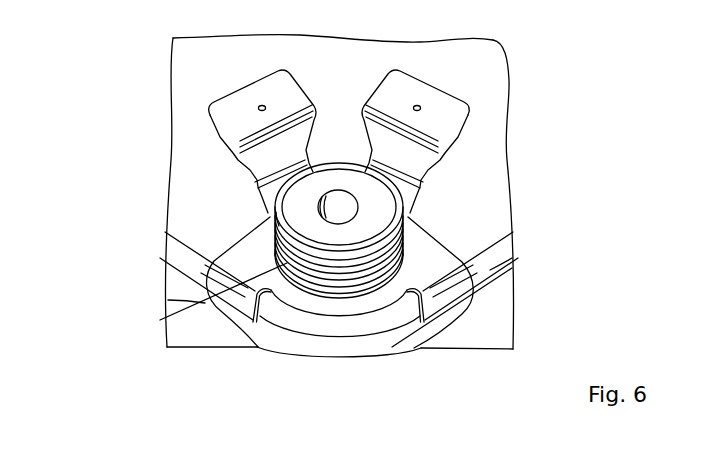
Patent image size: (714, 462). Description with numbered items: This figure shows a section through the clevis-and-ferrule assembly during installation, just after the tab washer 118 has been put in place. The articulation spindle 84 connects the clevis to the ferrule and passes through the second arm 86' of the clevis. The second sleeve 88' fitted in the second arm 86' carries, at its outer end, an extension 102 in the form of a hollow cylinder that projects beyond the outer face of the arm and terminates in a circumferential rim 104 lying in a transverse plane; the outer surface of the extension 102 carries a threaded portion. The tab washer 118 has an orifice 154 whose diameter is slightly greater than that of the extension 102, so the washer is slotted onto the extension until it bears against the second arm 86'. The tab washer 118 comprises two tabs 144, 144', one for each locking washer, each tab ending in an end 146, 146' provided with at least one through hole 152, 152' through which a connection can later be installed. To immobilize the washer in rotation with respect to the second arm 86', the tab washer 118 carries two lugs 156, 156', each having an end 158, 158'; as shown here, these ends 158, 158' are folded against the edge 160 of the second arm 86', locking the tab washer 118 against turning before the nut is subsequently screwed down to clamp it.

The articulation spindle 84 is at (372, 205).
The second arm 86' is at (550, 253).
The second sleeve 88' is at (131, 316).
The extension 102 is at (405, 240).
The circumferential rim 104 is at (275, 217).
The tab washer 118 is at (250, 172).
The tab 144 is at (346, 100).
The tab 144' is at (485, 119).
The end 146 is at (280, 111).
The end 146' is at (495, 113).
The through hole 152 is at (180, 65).
The through hole 152' is at (478, 55).
The orifice 154 is at (305, 295).
The lug 156 is at (154, 311).
The lug 156' is at (524, 282).
The end 158 is at (200, 350).
The end 158' is at (467, 347).
The edge 160 is at (317, 343).